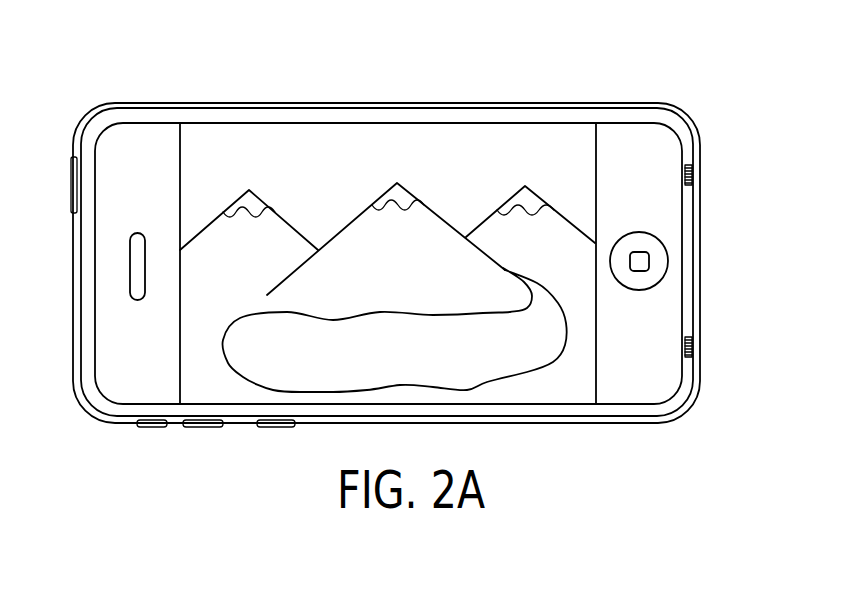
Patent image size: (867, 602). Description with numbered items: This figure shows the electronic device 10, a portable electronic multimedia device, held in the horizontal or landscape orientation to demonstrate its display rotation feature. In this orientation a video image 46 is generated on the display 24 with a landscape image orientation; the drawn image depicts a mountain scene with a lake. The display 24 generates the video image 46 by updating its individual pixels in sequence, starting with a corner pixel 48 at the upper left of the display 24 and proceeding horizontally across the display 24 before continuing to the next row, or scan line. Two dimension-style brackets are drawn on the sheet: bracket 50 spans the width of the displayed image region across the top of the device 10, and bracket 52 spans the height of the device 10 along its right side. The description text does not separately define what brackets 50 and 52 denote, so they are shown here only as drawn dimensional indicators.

The electronic device 10 is at (137, 35).
The display 24 is at (198, 357).
The video image 46 is at (203, 166).
The corner pixel 48 is at (178, 124).
The active display area width 50 is at (180, 97).
The display screen 52 is at (717, 98).